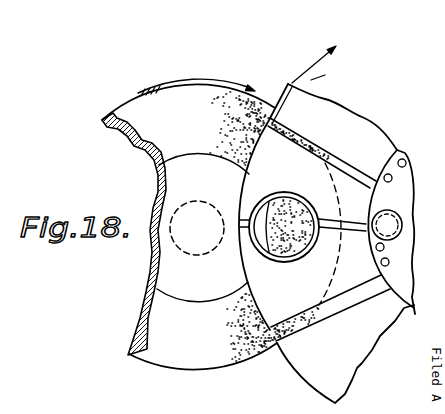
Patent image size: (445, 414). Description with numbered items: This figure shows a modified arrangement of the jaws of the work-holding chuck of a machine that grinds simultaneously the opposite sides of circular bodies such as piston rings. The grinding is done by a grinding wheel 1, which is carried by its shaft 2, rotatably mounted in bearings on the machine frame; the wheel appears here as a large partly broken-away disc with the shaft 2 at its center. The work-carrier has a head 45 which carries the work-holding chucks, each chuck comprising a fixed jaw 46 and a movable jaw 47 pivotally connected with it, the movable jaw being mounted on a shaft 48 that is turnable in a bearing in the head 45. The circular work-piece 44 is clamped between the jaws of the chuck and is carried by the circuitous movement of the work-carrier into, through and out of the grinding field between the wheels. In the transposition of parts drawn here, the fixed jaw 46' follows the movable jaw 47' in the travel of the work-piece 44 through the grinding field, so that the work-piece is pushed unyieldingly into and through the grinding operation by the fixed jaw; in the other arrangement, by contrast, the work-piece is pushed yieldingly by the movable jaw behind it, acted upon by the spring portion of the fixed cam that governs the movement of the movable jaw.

The grinding wheel 1 is at (192, 141).
The shaft 2 is at (197, 256).
The work-piece 44 is at (298, 280).
The head 45 is at (400, 243).
The fixed jaw 46 is at (341, 199).
The fixed jaw 46' is at (330, 308).
The movable jaw 47 is at (290, 188).
The movable jaw 47' is at (345, 354).
The shaft 48 is at (394, 214).